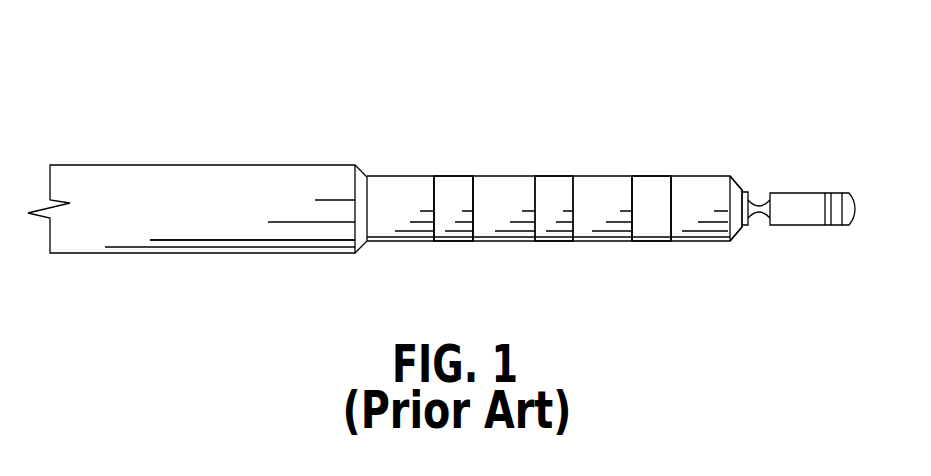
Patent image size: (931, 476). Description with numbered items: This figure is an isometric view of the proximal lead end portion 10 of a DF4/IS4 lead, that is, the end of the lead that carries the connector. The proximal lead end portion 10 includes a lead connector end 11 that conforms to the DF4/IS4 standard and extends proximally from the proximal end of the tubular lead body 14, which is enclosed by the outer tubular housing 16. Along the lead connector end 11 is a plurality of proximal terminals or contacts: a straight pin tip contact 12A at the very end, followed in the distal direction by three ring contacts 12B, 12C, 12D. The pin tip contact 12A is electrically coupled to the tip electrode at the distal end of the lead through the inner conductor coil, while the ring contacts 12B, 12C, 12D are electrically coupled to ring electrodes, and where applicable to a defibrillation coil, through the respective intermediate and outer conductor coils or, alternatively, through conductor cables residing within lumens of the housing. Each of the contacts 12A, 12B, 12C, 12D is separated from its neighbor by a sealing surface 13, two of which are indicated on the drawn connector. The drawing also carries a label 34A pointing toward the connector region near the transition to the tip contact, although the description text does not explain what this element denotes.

The proximal lead end portion 10 is at (141, 42).
The lead connector end 11 is at (527, 115).
The straight pin tip contact 12A is at (828, 201).
The ring contact 12B is at (652, 187).
The ring contact 12C is at (552, 187).
The ring contact 12D is at (452, 187).
The sealing surface 13 is at (485, 228).
The tubular lead body 14 is at (247, 163).
The outer tubular housing 16 is at (229, 220).
The shaft end portion 34A is at (733, 120).